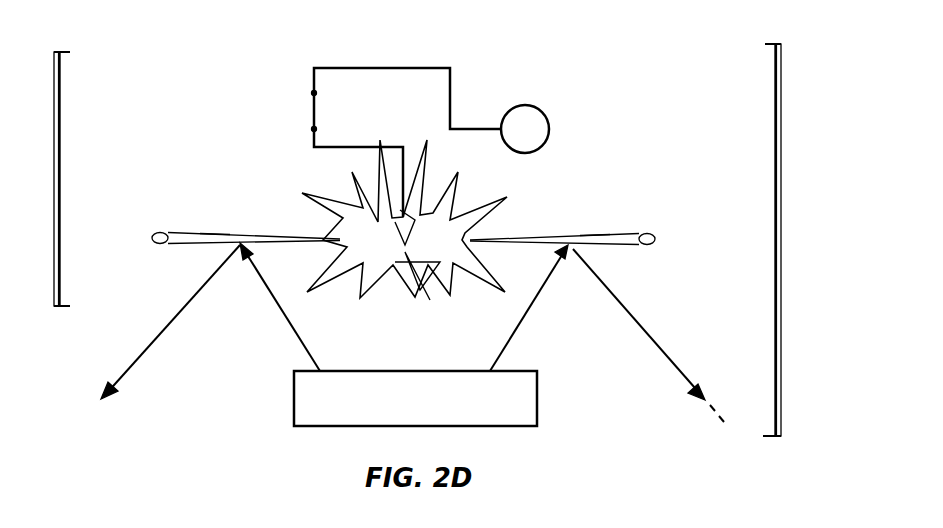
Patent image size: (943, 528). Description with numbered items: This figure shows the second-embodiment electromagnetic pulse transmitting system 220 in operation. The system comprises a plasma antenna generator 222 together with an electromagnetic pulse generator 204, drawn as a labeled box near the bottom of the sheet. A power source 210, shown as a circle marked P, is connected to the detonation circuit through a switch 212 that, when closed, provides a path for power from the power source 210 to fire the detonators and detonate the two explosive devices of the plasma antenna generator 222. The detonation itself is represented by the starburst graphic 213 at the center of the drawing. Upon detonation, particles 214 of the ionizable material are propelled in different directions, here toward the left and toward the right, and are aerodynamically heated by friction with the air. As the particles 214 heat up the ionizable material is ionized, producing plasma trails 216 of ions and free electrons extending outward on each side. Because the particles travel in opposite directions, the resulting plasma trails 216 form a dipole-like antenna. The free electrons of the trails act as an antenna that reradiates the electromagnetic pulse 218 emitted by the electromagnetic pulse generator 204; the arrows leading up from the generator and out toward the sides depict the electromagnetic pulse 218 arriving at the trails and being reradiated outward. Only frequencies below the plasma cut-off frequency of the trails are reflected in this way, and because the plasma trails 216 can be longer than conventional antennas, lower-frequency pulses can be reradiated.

The electromagnetic pulse generator 204 is at (538, 383).
The power source 210 is at (547, 112).
The switch 212 is at (316, 116).
The graphic 213 is at (318, 213).
The particles 214 is at (152, 237).
The plasma trails 216 is at (214, 237).
The electromagnetic pulse 218 is at (167, 323).
The electromagnetic pulse transmitting system 220 is at (782, 165).
The plasma antenna generator 222 is at (54, 68).